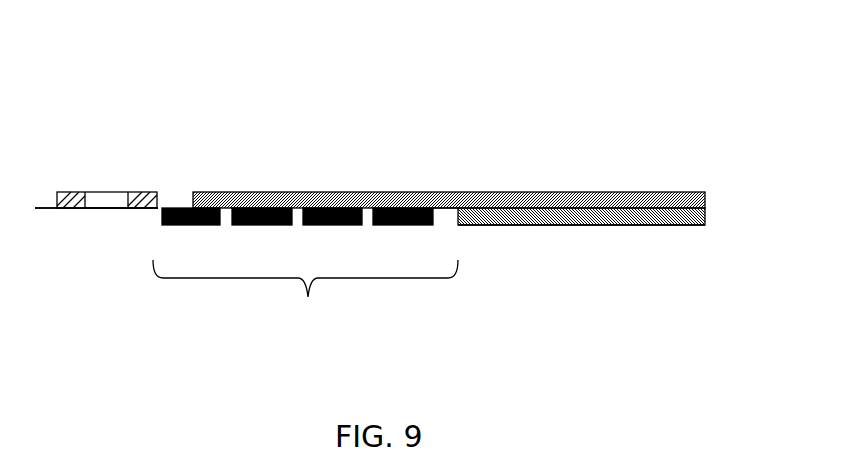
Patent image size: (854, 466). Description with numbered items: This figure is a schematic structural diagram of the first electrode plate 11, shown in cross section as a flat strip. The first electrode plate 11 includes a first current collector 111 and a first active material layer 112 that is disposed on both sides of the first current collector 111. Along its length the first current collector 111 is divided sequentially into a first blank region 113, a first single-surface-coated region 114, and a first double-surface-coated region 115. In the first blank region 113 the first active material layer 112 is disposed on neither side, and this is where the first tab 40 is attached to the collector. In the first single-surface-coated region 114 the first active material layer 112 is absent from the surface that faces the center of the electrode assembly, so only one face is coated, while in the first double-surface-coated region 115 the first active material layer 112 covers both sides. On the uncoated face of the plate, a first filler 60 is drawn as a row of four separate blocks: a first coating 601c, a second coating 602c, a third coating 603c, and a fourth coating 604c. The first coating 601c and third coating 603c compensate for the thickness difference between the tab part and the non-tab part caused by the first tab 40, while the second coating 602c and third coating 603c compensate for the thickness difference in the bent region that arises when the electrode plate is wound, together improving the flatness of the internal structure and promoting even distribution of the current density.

The first electrode plate 11 is at (110, 146).
The first tab 40 is at (105, 202).
The first current collector 111 is at (495, 206).
The first active material layer 112 is at (603, 200).
The first blank region 113 is at (124, 229).
The first single-surface-coated region 114 is at (455, 235).
The first double-surface-coated region 115 is at (651, 235).
The first filler 60 is at (305, 293).
The first coating 601c is at (192, 225).
The second coating 602c is at (260, 225).
The third coating 603c is at (332, 225).
The fourth coating 604c is at (408, 225).